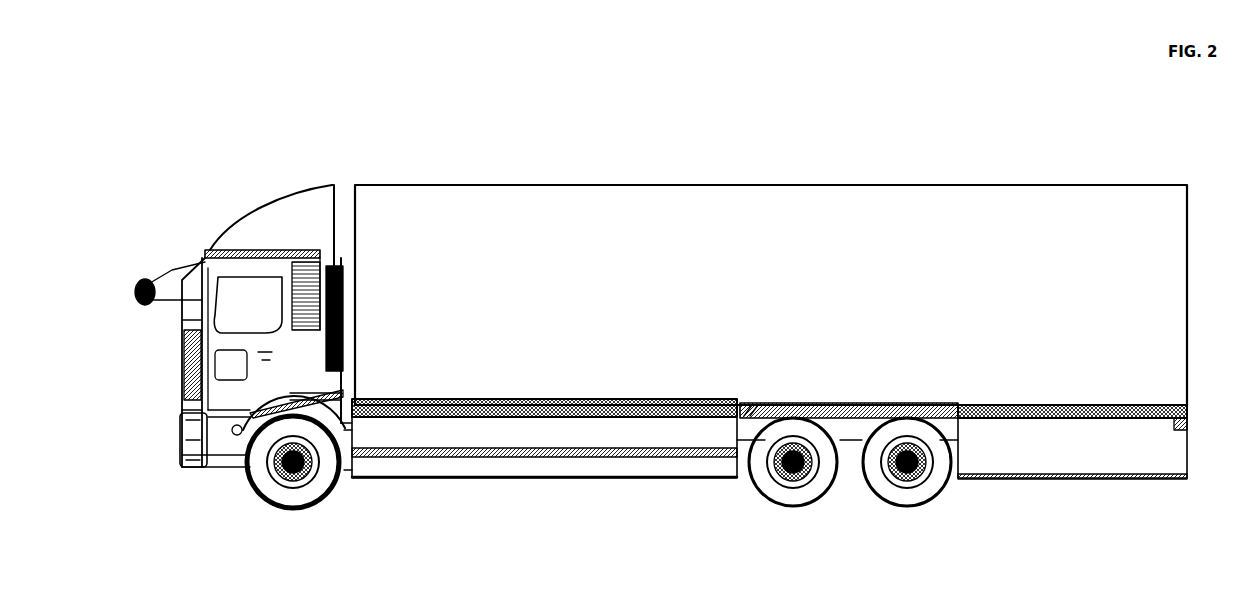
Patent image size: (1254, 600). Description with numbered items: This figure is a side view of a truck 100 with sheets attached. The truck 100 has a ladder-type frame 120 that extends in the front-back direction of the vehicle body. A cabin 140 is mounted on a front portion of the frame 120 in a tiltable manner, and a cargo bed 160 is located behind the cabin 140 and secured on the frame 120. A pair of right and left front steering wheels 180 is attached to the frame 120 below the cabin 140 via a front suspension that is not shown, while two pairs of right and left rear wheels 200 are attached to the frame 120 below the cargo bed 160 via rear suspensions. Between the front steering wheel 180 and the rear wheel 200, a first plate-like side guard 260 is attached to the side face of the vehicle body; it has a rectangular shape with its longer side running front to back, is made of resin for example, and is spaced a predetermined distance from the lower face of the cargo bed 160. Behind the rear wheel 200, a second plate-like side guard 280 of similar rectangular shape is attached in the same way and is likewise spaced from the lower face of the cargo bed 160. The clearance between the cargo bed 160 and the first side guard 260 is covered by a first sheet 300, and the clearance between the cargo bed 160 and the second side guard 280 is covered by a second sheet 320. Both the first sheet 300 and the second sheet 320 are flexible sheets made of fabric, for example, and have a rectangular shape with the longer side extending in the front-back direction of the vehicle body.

The truck 100 is at (704, 171).
The ladder-type frame 120 is at (855, 438).
The cabin 140 is at (202, 267).
The cargo bed 160 is at (880, 195).
The front steering wheel 180 is at (292, 512).
The rear wheel 200 is at (792, 507).
The first side guard 260 is at (544, 479).
The second side guard 280 is at (1072, 484).
The first sheet 300 is at (478, 409).
The second sheet 320 is at (1092, 420).